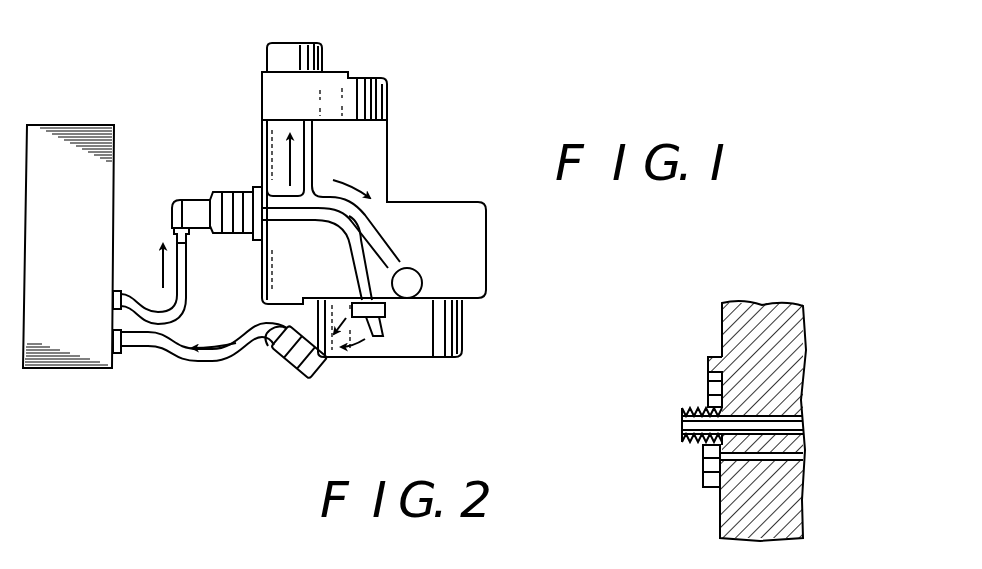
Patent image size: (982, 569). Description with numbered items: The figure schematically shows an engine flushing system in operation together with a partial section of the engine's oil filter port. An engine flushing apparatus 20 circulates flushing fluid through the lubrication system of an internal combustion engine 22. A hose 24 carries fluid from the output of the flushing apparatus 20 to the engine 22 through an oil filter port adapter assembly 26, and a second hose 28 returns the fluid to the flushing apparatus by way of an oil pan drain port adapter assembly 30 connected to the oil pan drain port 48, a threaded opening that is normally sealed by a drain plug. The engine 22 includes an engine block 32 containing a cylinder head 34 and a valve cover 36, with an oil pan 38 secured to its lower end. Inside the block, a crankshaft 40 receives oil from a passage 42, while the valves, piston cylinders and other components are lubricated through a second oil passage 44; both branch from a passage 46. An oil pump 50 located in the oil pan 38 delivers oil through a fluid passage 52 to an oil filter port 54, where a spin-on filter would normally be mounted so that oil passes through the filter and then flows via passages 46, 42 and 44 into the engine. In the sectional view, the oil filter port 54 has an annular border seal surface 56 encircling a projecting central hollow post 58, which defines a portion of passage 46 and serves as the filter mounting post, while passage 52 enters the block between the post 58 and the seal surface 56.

In FIG. 1, the engine flushing apparatus 20 is at (128, 150).
In FIG. 1, the internal combustion engine 22 is at (250, 60).
In FIG. 1, the hose 24 is at (190, 253).
In FIG. 1, the oil filter port adapter assembly 26 is at (215, 184).
In FIG. 1, the second hose 28 is at (253, 329).
In FIG. 1, the oil pan drain port adapter assembly 30 is at (321, 373).
In FIG. 1, the engine block 32 is at (388, 160).
In FIG. 2, the engine block 32 is at (805, 348).
In FIG. 1, the cylinder head 34 is at (388, 96).
In FIG. 1, the valve cover 36 is at (322, 53).
In FIG. 1, the oil pan 38 is at (463, 325).
In FIG. 1, the crankshaft 40 is at (418, 270).
In FIG. 1, the passage 42 is at (390, 228).
In FIG. 1, the second oil passage 44 is at (312, 134).
In FIG. 1, the passage 46 is at (256, 186).
In FIG. 2, the passage 46 is at (800, 426).
In FIG. 1, the oil pan drain port 48 is at (277, 352).
In FIG. 1, the oil pump 50 is at (385, 322).
In FIG. 1, the fluid passage 52 is at (353, 248).
In FIG. 2, the fluid passage 52 is at (800, 446).
In FIG. 1, the oil filter port 54 is at (243, 186).
In FIG. 2, the oil filter port 54 is at (697, 379).
In FIG. 2, the annular border seal surface 56 is at (703, 475).
In FIG. 2, the central hollow post 58 is at (682, 425).